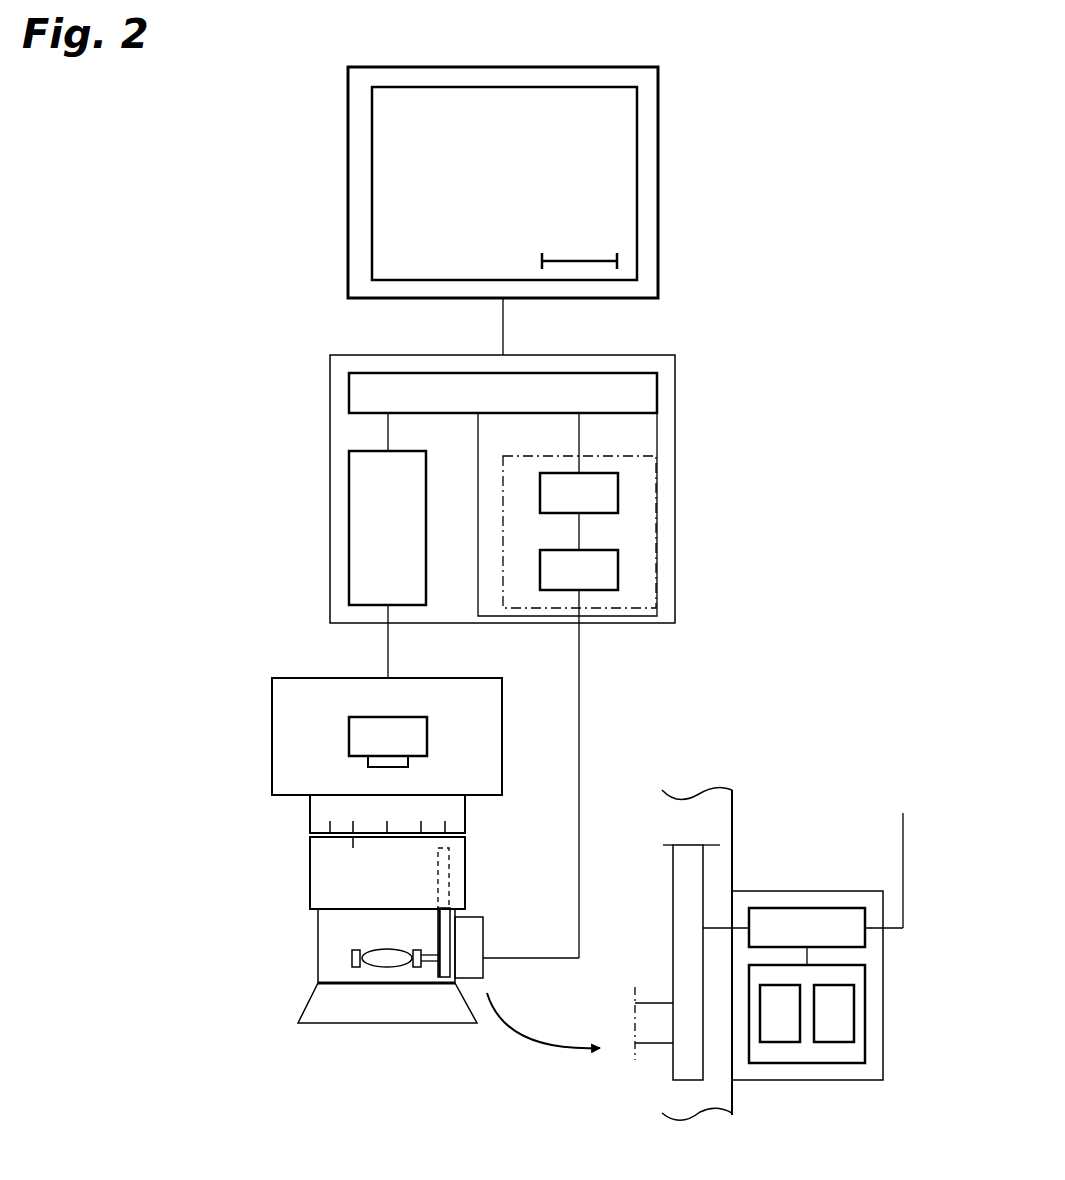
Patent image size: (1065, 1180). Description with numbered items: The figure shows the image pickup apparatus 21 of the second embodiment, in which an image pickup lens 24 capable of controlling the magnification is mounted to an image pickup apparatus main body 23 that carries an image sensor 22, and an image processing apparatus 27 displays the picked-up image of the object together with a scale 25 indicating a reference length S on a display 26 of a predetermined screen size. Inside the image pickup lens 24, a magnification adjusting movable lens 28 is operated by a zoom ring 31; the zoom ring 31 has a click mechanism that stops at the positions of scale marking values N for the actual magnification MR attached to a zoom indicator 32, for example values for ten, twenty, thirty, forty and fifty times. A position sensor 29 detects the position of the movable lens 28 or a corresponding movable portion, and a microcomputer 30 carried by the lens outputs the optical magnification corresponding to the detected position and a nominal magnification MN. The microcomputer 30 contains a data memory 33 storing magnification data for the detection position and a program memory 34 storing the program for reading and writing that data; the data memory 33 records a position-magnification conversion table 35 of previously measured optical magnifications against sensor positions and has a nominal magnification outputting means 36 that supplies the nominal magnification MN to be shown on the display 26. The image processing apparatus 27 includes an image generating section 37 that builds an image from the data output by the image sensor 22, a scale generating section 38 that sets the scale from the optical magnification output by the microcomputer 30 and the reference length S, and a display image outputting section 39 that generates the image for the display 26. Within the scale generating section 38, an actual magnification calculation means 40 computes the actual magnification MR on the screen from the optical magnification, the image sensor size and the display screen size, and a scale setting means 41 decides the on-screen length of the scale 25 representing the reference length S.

The measuring microscope system 21 is at (313, 218).
The image sensor 22 is at (412, 737).
The image pickup apparatus main body 23 is at (270, 717).
The image pickup lens 24 is at (318, 965).
The scale 25 is at (582, 258).
The display 26 is at (347, 257).
The image processing apparatus 27 is at (333, 458).
The magnification adjusting movable lens 28 is at (392, 958).
The position sensor 29 is at (437, 927).
The microcomputer 30 is at (485, 933).
The zoom ring 31 is at (357, 872).
The zoom indicator 32 is at (310, 814).
The data memory 33 is at (863, 1003).
The program memory 34 is at (803, 935).
The position-magnification conversion table 35 is at (784, 1017).
The nominal magnification outputting means 36 is at (835, 1028).
The image generating section 37 is at (370, 563).
The scale generating section 38 is at (610, 609).
The display image outputting section 39 is at (435, 373).
The actual magnification calculation means 40 is at (602, 573).
The scale setting means 41 is at (608, 494).
The nominal magnification MN is at (610, 110).
The actual magnification MR is at (607, 534).
The reference length S is at (598, 223).
The scale marking values N is at (455, 813).